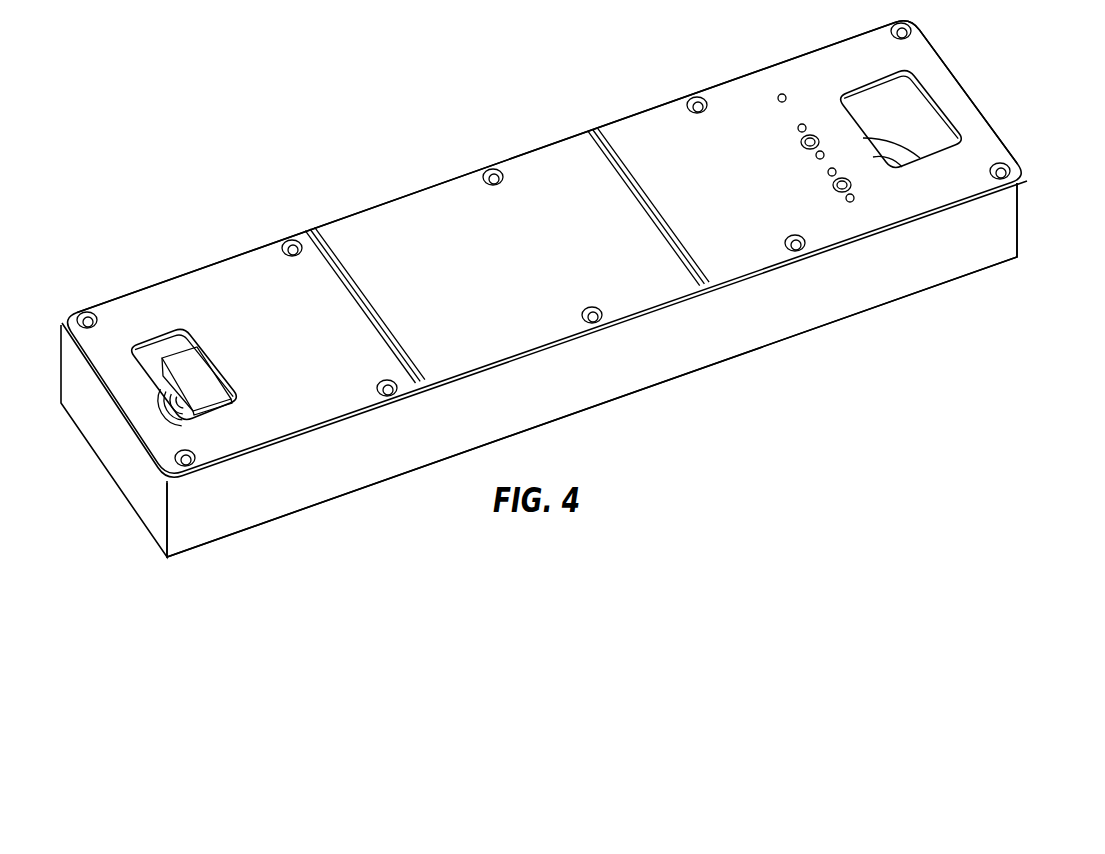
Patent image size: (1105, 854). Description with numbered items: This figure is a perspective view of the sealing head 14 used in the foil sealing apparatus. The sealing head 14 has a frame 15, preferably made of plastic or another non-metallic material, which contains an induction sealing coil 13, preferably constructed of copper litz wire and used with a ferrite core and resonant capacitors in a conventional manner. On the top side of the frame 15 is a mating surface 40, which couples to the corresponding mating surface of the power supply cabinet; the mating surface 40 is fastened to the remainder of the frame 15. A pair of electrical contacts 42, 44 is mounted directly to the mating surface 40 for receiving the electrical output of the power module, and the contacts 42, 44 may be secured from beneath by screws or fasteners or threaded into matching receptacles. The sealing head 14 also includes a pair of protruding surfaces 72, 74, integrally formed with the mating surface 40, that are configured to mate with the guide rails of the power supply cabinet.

The induction sealing coil 13 is at (178, 375).
The sealing head 14 is at (286, 181).
The frame 15 is at (622, 380).
The mating surface 40 is at (548, 158).
The electrical contact 42 is at (832, 184).
The electrical contact 44 is at (802, 139).
The protruding surface 72 is at (1026, 183).
The protruding surface 74 is at (800, 52).